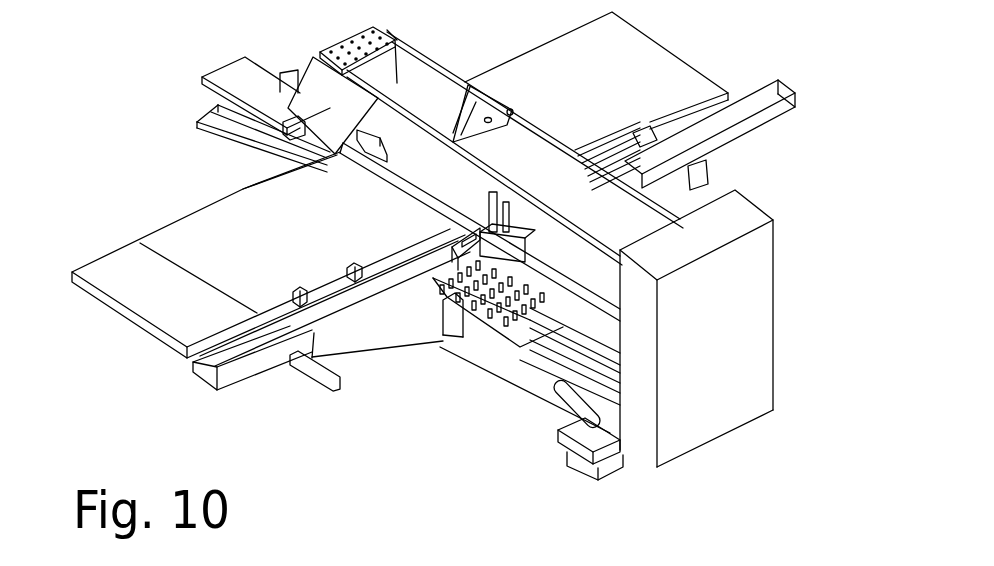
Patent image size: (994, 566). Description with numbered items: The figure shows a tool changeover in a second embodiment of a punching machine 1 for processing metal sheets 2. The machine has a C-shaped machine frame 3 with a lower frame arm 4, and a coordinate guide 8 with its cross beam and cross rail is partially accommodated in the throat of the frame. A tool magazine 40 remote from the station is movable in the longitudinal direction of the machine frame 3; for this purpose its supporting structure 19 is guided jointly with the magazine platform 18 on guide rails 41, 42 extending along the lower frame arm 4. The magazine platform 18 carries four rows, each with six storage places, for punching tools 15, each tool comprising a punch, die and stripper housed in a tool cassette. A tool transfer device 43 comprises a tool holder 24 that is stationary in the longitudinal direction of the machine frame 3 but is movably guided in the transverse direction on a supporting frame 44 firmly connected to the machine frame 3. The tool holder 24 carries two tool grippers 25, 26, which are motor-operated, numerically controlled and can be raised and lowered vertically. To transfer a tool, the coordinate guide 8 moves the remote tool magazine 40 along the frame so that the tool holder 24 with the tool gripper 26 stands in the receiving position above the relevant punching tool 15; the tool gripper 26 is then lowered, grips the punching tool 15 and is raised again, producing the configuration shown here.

The punching machine 1 is at (228, 170).
The metal sheets 2 is at (212, 258).
The machine frame 3 is at (784, 299).
The lower frame arm 4 is at (503, 362).
The coordinate guide 8 is at (190, 382).
The punching tool 15 is at (585, 302).
The magazine platform 18 is at (458, 340).
The supporting structure 19 is at (538, 350).
The tool holder 24 is at (502, 186).
The tool gripper 25 is at (498, 186).
The tool gripper 26 is at (507, 182).
The remote tool magazine 40 is at (550, 362).
The guide rails 41 is at (585, 340).
The rail 42 is at (598, 352).
The tool transfer device 43 is at (552, 263).
The supporting frame 44 is at (712, 150).